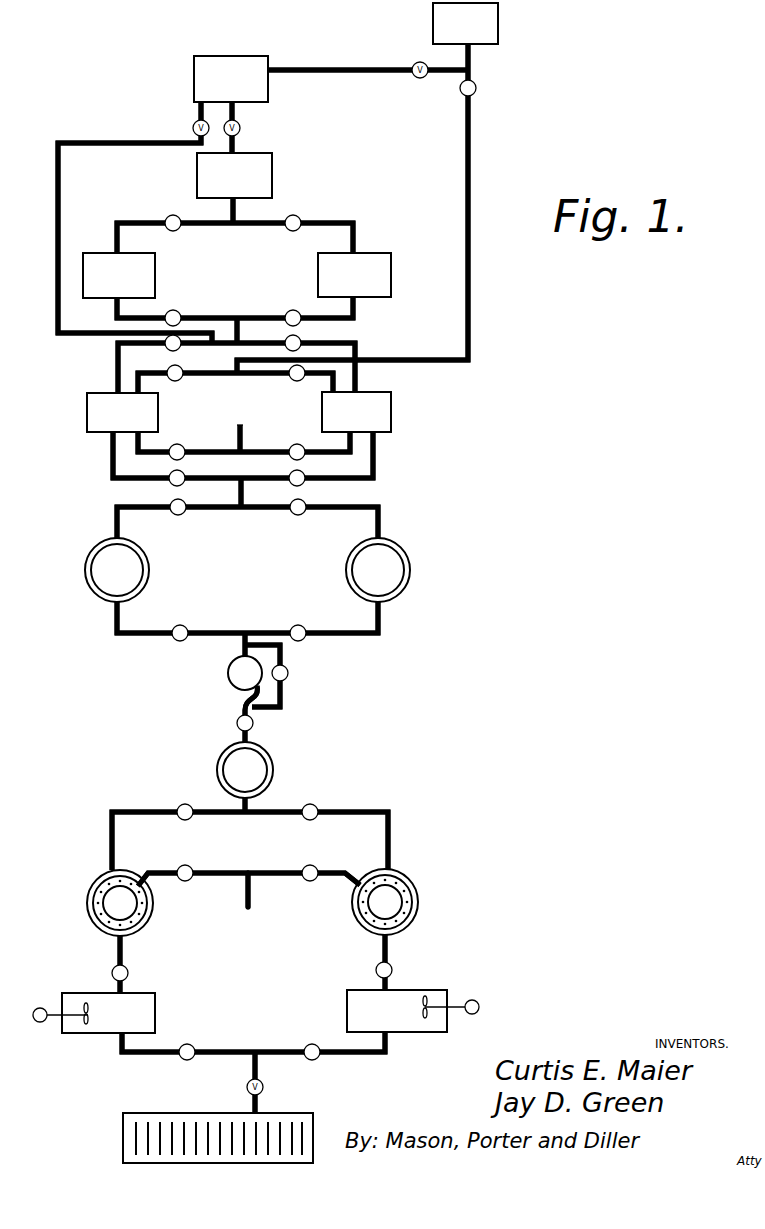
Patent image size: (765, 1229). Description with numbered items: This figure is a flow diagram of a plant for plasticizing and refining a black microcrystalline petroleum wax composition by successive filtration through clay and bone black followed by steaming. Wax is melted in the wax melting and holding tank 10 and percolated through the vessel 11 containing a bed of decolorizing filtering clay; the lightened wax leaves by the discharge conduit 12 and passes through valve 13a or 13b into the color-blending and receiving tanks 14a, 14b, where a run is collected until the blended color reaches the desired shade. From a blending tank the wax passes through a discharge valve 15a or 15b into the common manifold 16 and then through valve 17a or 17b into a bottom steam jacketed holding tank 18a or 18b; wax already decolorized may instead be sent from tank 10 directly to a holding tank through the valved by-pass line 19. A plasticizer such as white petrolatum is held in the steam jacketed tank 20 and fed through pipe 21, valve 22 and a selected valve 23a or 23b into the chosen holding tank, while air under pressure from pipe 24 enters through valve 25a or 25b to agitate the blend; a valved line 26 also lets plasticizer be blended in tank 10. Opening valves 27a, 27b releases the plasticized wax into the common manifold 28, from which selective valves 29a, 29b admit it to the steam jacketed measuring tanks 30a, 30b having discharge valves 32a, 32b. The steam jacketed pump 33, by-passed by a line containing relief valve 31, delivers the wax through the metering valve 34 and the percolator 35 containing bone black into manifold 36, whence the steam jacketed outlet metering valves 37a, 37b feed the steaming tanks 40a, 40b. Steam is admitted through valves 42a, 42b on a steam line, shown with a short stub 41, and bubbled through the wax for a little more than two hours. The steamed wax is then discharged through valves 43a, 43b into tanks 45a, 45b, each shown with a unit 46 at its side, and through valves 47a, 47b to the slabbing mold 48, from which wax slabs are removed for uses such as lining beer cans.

The wax melting and holding tank 10 is at (252, 63).
The filtering vessel 11 is at (258, 165).
The discharge conduit 12 is at (253, 226).
The valve 13a is at (172, 215).
The valve 13b is at (294, 215).
The color-blending and receiving tank 14a is at (145, 281).
The color-blending and receiving tank 14b is at (377, 280).
The discharge valve 15a is at (179, 314).
The valve 15b is at (295, 310).
The common manifold 16 is at (250, 322).
The valve 17a is at (169, 350).
The valve 17b is at (303, 338).
The holding tank 18a is at (88, 446).
The holding tank 18b is at (385, 423).
The valved by-pass line 19 is at (112, 143).
The plasticizer tank 20 is at (493, 25).
The pipe 21 is at (472, 160).
The valve 22 is at (477, 88).
The valve 23a is at (176, 381).
The valve 23b is at (292, 382).
The air pipe 24 is at (237, 427).
The valve 25a is at (178, 446).
The valve 25b is at (297, 446).
The valved line 26 is at (343, 67).
The valve 27a is at (171, 483).
The valve 27b is at (304, 483).
The common manifold 28 is at (240, 503).
The selective valve 29a is at (176, 516).
The selective valve 29b is at (298, 516).
The measuring tank 30a is at (110, 583).
The measuring tank 30b is at (388, 578).
The relief valve 31 is at (289, 673).
The discharge valve 32a is at (178, 641).
The discharge valve 32b is at (305, 640).
The steam jacketed pump 33 is at (238, 673).
The steam jacketed metering valve 34 is at (254, 725).
The percolator 35 is at (260, 770).
The manifold 36 is at (210, 810).
The steam jacketed outlet metering valve 37a is at (182, 808).
The steam jacketed outlet metering valve 37b is at (313, 805).
The steaming tank 40a is at (97, 883).
The steaming tank 40b is at (413, 902).
The drain stub 41 is at (252, 896).
The valve 42a is at (187, 883).
The valve 42b is at (312, 882).
The valve 43a is at (130, 968).
The valve 43b is at (394, 967).
The tank 45a is at (110, 1025).
The agitated tank 45b is at (447, 1025).
The agitator motor 46 is at (53, 1004).
The valve 47a is at (185, 1060).
The valve 47b is at (315, 1060).
The slabbing mold 48 is at (133, 1138).